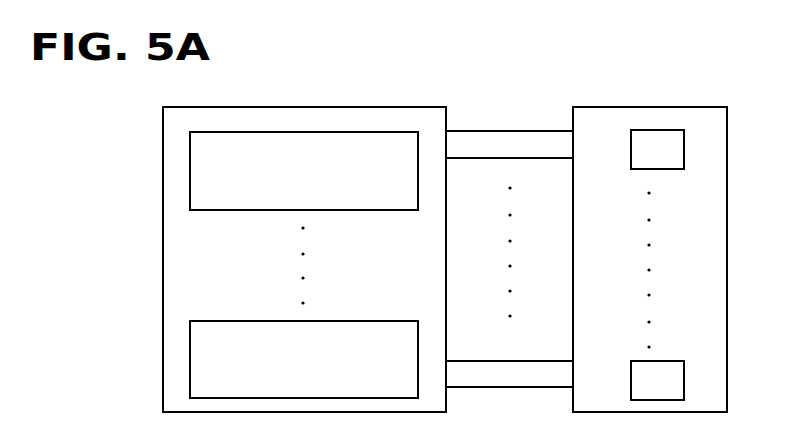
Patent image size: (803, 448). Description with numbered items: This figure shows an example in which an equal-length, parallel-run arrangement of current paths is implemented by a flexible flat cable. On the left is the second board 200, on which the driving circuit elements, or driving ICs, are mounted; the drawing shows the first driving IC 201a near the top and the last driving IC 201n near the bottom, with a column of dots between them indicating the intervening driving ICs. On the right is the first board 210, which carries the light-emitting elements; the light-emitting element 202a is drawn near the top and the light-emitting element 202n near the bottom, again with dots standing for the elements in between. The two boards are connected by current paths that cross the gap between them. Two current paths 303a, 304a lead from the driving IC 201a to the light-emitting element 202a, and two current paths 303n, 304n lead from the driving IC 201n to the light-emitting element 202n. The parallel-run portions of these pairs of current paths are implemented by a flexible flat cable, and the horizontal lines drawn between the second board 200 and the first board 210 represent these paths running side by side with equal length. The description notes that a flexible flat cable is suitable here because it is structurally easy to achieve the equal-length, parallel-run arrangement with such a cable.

The second board 200 is at (418, 106).
The driving circuit element 201a is at (399, 211).
The driving circuit element 201n is at (398, 320).
The first board 210 is at (698, 106).
The light-emitting element 202a is at (680, 170).
The light-emitting element 202n is at (677, 360).
The current path 303a is at (541, 130).
The current path 304a is at (543, 159).
The current path 303n is at (541, 360).
The current path 304n is at (543, 388).